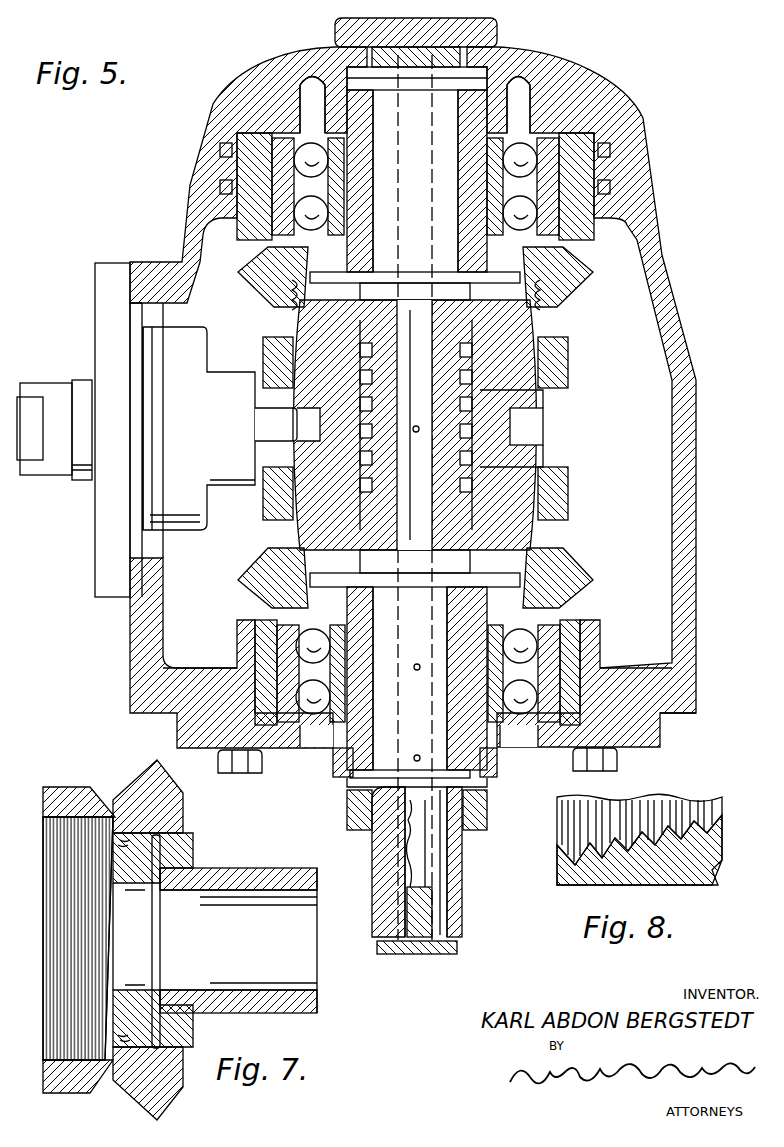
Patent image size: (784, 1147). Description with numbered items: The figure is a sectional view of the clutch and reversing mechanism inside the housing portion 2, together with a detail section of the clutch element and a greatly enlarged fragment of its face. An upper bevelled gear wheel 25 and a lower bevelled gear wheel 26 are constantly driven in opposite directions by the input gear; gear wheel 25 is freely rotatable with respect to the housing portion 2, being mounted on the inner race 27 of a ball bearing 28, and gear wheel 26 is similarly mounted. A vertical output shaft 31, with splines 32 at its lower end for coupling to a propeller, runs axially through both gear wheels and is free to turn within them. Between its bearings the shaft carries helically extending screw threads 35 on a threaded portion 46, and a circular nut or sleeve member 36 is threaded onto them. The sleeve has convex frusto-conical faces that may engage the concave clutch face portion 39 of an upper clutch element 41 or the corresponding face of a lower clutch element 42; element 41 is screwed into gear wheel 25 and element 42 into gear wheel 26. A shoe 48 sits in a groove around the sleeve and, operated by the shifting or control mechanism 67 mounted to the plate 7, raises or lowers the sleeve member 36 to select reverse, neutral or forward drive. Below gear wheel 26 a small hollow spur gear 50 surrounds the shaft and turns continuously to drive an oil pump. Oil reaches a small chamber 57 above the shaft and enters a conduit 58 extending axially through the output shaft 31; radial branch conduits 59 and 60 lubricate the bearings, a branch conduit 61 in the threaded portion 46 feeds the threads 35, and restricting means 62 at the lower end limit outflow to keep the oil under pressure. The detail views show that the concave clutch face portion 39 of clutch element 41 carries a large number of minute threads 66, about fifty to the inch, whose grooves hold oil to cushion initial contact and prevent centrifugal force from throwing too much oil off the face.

In FIG. 5, the housing portion 2 is at (696, 377).
In FIG. 5, the plate 7 is at (116, 264).
In FIG. 5, the upper bevelled gear wheel 25 is at (582, 286).
In FIG. 7, the upper bevelled gear wheel 25 is at (183, 814).
In FIG. 5, the lower bevelled gear wheel 26 is at (575, 561).
In FIG. 5, the inner race 27 is at (511, 136).
In FIG. 5, the ball bearing 28 is at (313, 136).
In FIG. 5, the vertical output shaft 31 is at (462, 868).
In FIG. 5, the splines 32 is at (462, 906).
In FIG. 5, the helically extending splines or screw threads 35 is at (482, 420).
In FIG. 5, the circular nut or sleeve member 36 is at (543, 450).
In FIG. 7, the concave frusto-conical clutch face portion 39 is at (44, 1090).
In FIG. 5, the upper clutch element 41 is at (568, 363).
In FIG. 7, the upper clutch element 41 is at (79, 789).
In FIG. 8, the upper clutch element 41 is at (557, 876).
In FIG. 5, the lower clutch element 42 is at (568, 503).
In FIG. 5, the threaded portion 46 is at (466, 478).
In FIG. 5, the shoe 48 is at (288, 448).
In FIG. 5, the small hollow spur gear 50 is at (487, 801).
In FIG. 5, the small chamber 57 is at (400, 52).
In FIG. 5, the conduit 58 is at (430, 366).
In FIG. 5, the branch conduit 59 is at (416, 102).
In FIG. 5, the branch conduit 60 is at (419, 200).
In FIG. 5, the branch conduit 61 is at (418, 425).
In FIG. 5, the restricting means 62 is at (457, 948).
In FIG. 7, the minute threads 66 is at (44, 802).
In FIG. 8, the minute threads 66 is at (572, 851).
In FIG. 5, the shifting or control mechanism 67 is at (199, 328).